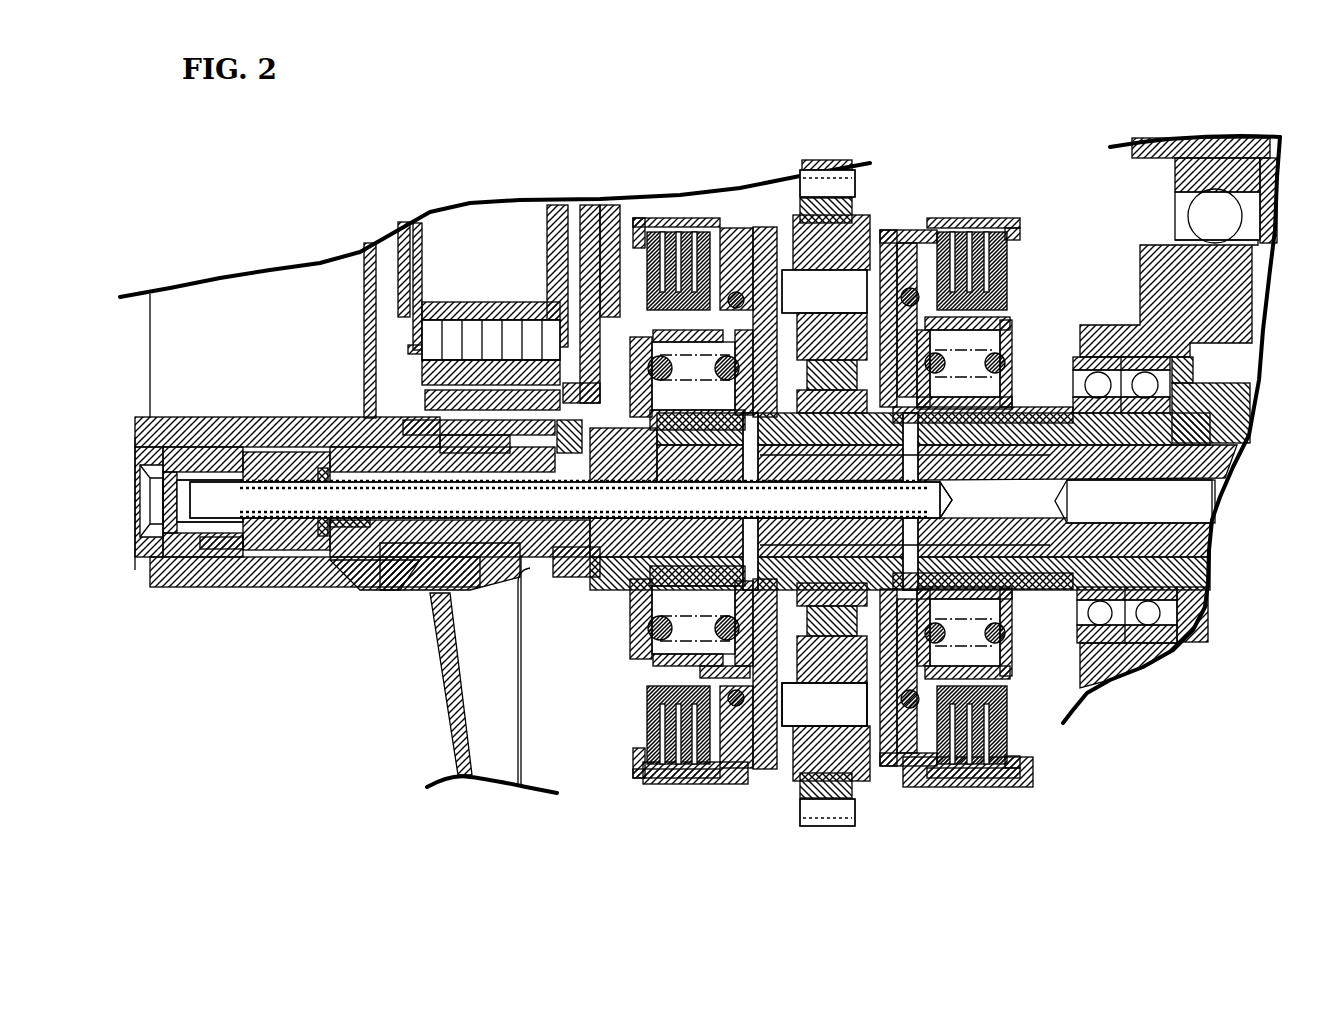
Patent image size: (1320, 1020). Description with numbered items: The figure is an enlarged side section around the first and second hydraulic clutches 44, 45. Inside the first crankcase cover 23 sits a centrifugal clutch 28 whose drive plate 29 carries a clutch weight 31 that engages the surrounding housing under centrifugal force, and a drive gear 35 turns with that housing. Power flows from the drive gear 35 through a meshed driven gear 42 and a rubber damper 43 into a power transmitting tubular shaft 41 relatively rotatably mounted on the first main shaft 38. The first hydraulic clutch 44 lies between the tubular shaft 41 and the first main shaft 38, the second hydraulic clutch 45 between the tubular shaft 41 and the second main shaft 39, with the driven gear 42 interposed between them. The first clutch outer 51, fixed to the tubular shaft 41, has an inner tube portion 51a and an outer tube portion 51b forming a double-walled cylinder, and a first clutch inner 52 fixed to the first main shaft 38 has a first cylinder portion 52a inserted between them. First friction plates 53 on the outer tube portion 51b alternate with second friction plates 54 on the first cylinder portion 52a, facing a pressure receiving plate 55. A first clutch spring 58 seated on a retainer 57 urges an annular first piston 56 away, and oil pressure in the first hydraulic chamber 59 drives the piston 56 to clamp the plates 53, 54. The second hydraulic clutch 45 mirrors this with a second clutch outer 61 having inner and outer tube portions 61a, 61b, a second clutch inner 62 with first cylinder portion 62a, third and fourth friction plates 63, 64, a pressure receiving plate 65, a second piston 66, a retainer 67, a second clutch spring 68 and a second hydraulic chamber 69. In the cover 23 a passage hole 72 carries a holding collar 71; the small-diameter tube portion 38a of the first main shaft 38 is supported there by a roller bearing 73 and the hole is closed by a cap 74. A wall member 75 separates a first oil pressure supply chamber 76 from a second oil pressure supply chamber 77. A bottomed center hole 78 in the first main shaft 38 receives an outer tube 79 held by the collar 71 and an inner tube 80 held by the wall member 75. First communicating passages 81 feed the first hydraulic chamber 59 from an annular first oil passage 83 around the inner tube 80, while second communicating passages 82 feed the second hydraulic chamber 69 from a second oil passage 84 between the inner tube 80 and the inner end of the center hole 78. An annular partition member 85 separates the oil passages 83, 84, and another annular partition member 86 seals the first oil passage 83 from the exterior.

The first crankcase cover 23 is at (440, 698).
The centrifugal clutch 28 is at (382, 248).
The drive plate 29 is at (548, 225).
The clutch weight 31 is at (440, 368).
The drive gear 35 is at (820, 158).
The first main shaft 38 is at (1205, 532).
The small-diameter tube portion 38a is at (505, 450).
The second main shaft 39 is at (1250, 437).
The power transmitting tubular shaft 41 is at (862, 440).
The driven gear 42 is at (855, 812).
The rubber damper 43 is at (831, 330).
The first hydraulic clutch 44 is at (657, 796).
The second hydraulic clutch 45 is at (1008, 792).
The first clutch outer 51 is at (765, 250).
The inner tube portion 51a is at (635, 612).
The outer tube portion 51b is at (650, 222).
The first clutch inner 52 is at (633, 590).
The first cylinder portion 52a is at (660, 690).
The first friction plates 53 is at (690, 230).
The second friction plates 54 is at (692, 768).
The pressure receiving plate 55 is at (657, 742).
The first piston 56 is at (728, 230).
The retainer 57 is at (650, 372).
The first clutch spring 58 is at (652, 655).
The first hydraulic chamber 59 is at (765, 668).
The second clutch outer 61 is at (905, 773).
The inner tube portion 61a is at (1013, 628).
The outer tube portion 61b is at (998, 222).
The second clutch inner 62 is at (1013, 400).
The first cylinder portion 62a is at (1010, 328).
The third friction plates 63 is at (965, 230).
The fourth friction plates 64 is at (980, 768).
The pressure receiving plate 65 is at (1010, 735).
The second piston 66 is at (892, 230).
The retainer 67 is at (1013, 355).
The second clutch spring 68 is at (1010, 686).
The second hydraulic chamber 69 is at (888, 700).
The holding collar 71 is at (402, 418).
The passage hole 72 is at (215, 450).
The roller bearing 73 is at (488, 368).
The cap 74 is at (165, 418).
The wall member 75 is at (270, 455).
The first oil pressure supply chamber 76 is at (310, 560).
The second oil pressure supply chamber 77 is at (228, 550).
The center hole 78 is at (944, 528).
The outer tube 79 is at (388, 592).
The inner tube 80 is at (365, 545).
The first communicating passages 81 is at (770, 455).
The second communicating passages 82 is at (865, 425).
The first oil passage 83 is at (560, 580).
The second oil passage 84 is at (455, 580).
The annular partition member 85 is at (790, 556).
The annular partition member 86 is at (519, 590).